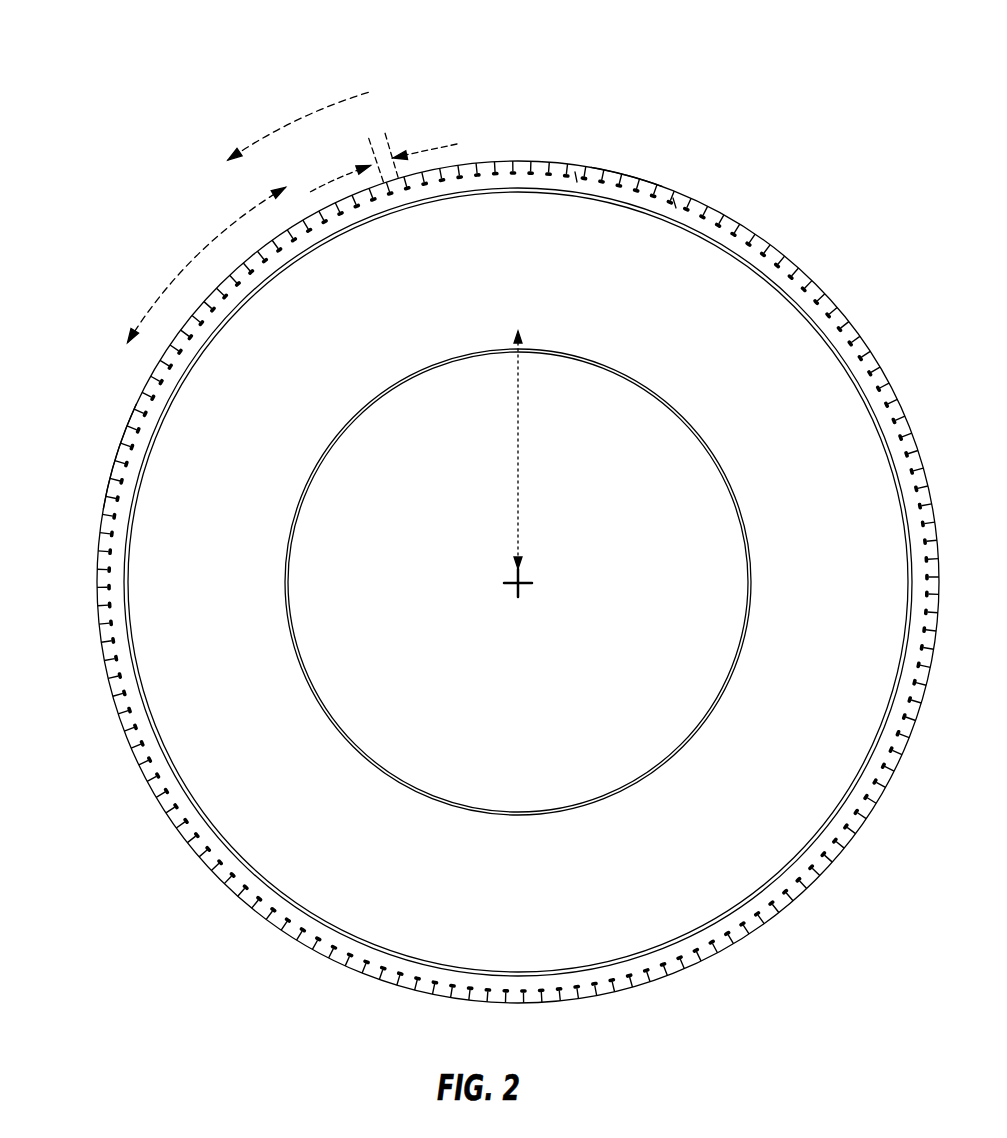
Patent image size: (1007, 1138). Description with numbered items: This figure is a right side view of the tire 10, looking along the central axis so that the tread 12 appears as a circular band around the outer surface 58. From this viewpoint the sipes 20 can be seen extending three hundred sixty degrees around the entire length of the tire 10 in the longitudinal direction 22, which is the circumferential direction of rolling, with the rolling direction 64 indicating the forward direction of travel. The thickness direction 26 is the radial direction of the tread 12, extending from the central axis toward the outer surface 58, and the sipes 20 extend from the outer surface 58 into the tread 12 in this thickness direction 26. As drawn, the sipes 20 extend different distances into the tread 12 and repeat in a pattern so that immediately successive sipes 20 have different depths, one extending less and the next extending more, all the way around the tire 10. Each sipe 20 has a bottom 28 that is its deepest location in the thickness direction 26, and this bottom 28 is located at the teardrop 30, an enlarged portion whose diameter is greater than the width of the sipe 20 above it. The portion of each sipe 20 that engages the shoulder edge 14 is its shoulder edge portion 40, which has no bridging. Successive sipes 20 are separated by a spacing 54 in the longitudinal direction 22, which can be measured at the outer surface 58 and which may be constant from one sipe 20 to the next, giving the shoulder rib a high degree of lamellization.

The tire 10 is at (866, 56).
The tread 12 is at (503, 162).
The shoulder edge 14 is at (632, 175).
The sipes 20 is at (745, 228).
The longitudinal direction 22 is at (198, 253).
The thickness direction 26 is at (522, 450).
The bottom 28 is at (532, 174).
The teardrop 30 is at (575, 172).
The shoulder edge portion 40 is at (673, 198).
The spacing 54 is at (435, 145).
The outer surface 58 is at (112, 447).
The rolling direction 64 is at (290, 126).